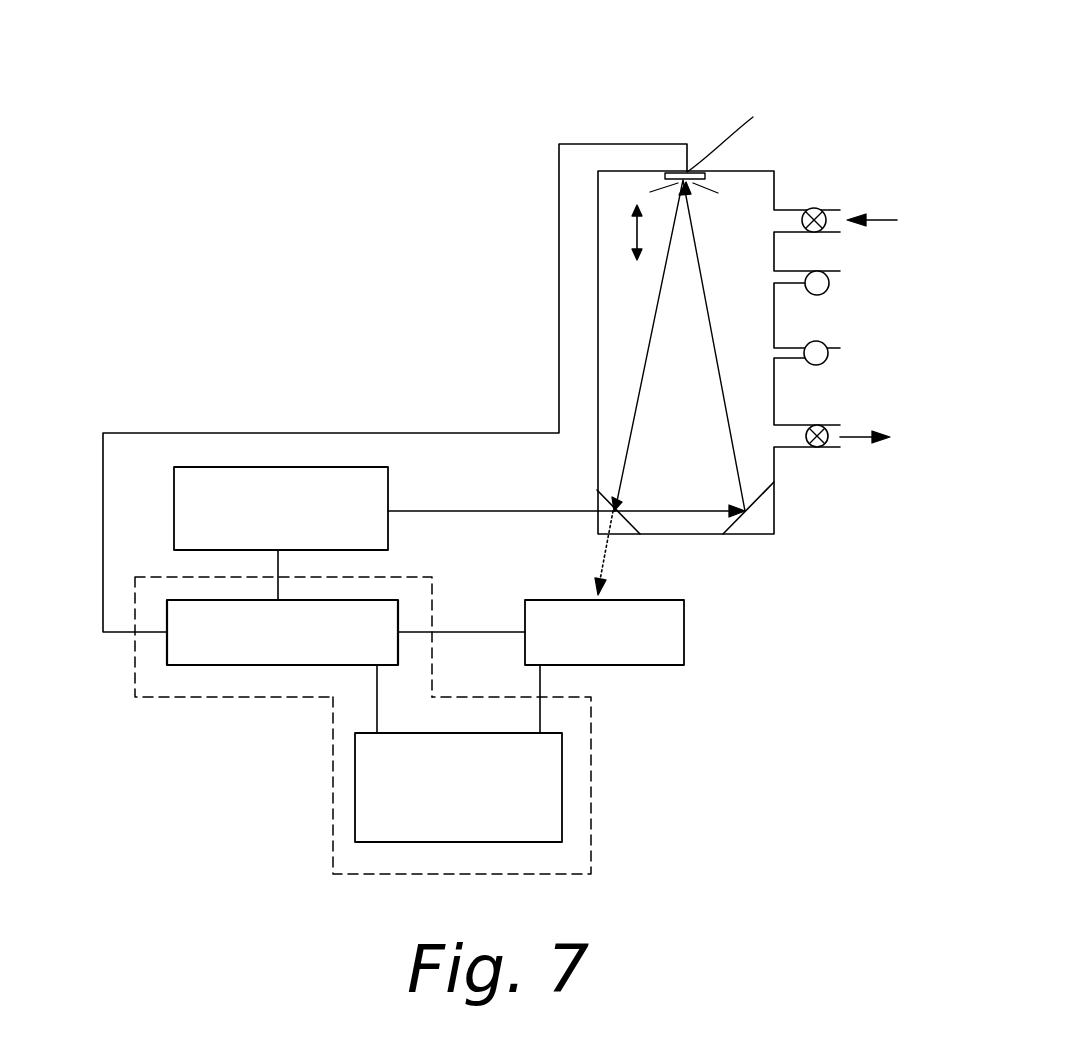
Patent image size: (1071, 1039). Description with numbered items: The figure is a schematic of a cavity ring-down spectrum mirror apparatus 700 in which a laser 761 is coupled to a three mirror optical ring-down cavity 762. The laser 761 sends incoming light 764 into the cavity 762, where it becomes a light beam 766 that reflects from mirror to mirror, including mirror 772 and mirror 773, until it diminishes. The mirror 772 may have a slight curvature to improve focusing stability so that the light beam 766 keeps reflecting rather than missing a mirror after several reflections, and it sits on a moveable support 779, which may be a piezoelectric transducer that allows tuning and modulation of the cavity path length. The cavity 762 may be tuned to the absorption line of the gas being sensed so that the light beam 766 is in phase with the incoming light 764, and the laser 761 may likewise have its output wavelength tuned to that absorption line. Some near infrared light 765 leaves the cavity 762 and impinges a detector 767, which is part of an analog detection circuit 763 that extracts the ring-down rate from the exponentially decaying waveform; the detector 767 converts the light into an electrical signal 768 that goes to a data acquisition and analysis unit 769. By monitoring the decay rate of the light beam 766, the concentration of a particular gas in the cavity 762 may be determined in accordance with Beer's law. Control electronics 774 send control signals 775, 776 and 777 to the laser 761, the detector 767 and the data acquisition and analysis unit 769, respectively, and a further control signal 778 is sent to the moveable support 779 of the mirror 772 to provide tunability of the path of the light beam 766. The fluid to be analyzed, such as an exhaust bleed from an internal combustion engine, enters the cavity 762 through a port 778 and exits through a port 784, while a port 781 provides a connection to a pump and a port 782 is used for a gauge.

The cavity ring-down spectrum mirror apparatus 700 is at (307, 160).
The laser 761 is at (388, 468).
The optical ring-down cavity 762 is at (765, 171).
The analog detection circuit 763 is at (591, 797).
The incoming light 764 is at (475, 511).
The near infrared light 765 is at (602, 565).
The light beam 766 is at (648, 345).
The detector 767 is at (683, 600).
The electrical signal 768 is at (540, 706).
The data acquisition and analysis unit 769 is at (355, 787).
The mirror 772 is at (680, 183).
The mirror 773 is at (677, 546).
The control electronics 774 is at (167, 655).
The control signal 775 is at (278, 567).
The control signal 776 is at (453, 632).
The control signal 777 is at (632, 227).
The control signal / port 778 is at (443, 433).
The moveable support 779 is at (737, 122).
The port 781 is at (800, 343).
The port 782 is at (797, 268).
The port 784 is at (813, 424).